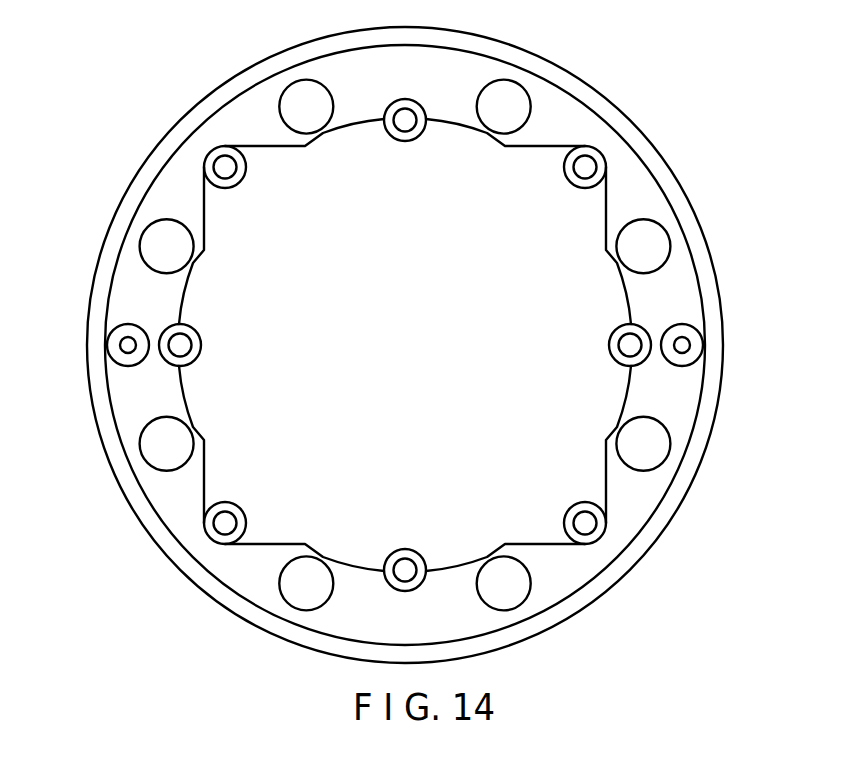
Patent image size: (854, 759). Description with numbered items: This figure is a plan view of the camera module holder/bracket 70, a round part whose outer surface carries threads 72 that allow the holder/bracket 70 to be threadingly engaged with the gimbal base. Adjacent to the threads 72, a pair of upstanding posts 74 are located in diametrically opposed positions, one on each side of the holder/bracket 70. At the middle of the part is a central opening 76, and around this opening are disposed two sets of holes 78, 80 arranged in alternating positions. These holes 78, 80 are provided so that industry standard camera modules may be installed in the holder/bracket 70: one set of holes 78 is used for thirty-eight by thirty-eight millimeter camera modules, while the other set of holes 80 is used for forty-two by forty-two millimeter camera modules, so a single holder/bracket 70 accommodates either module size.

The camera module holder/bracket 70 is at (407, 335).
The threads 72 is at (683, 485).
The upstanding posts 74 is at (122, 347).
The central opening 76 is at (408, 357).
The holes 78 is at (397, 141).
The holes 80 is at (243, 181).